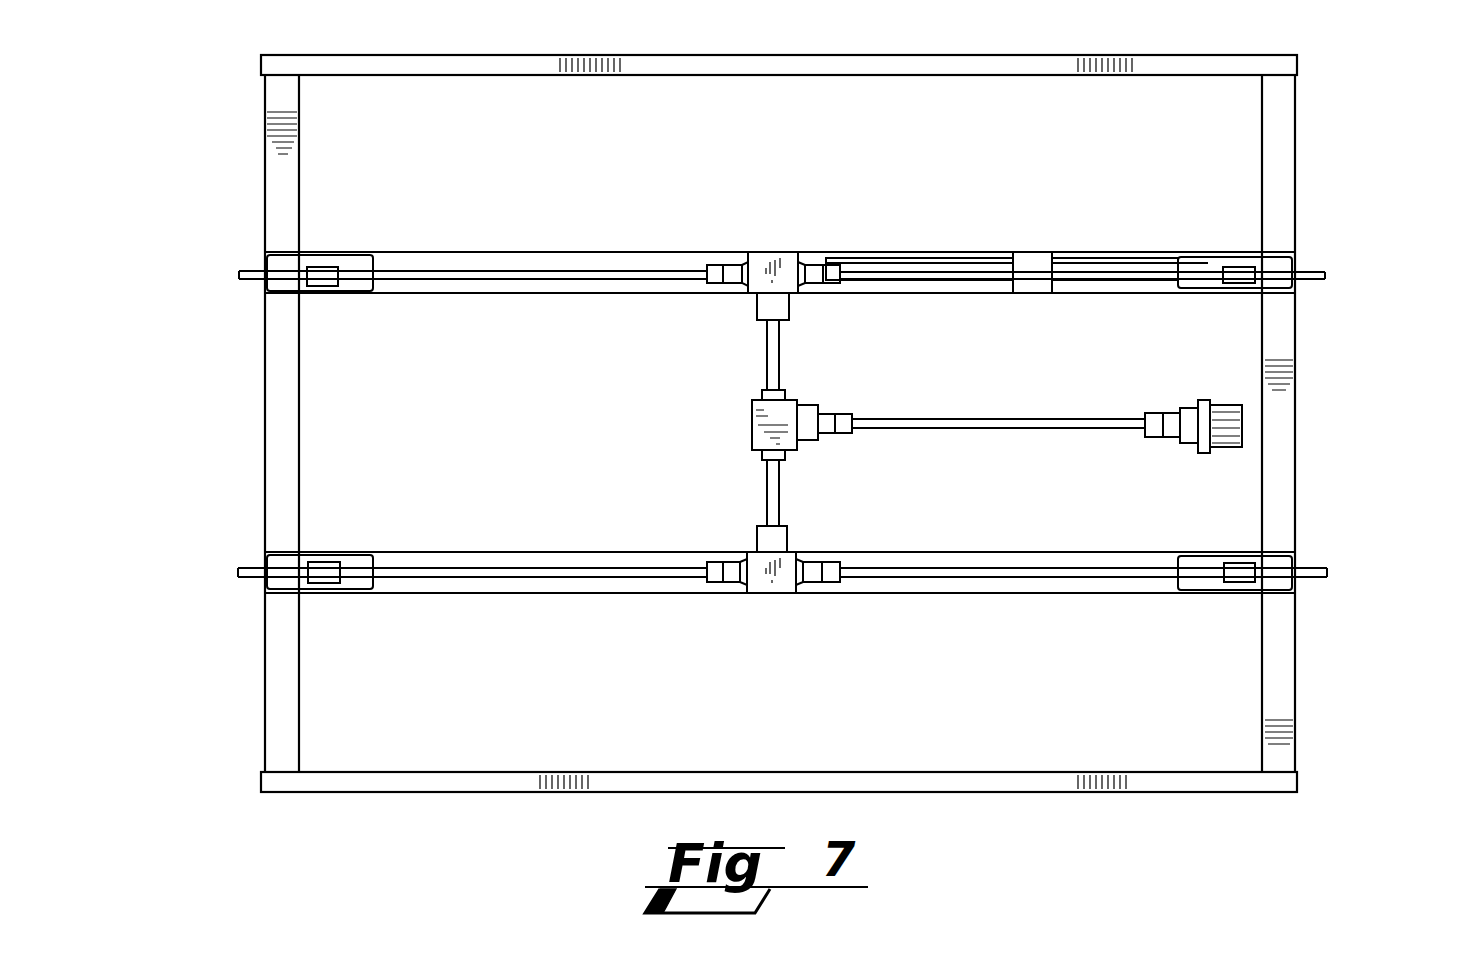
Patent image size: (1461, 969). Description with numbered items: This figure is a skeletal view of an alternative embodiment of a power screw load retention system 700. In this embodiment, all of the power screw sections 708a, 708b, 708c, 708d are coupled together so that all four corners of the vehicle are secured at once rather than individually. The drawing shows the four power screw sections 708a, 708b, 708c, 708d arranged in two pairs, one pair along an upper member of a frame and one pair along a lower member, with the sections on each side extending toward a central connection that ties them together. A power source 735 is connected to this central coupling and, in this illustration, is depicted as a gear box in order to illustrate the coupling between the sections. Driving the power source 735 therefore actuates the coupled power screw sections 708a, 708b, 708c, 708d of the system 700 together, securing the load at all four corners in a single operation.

The power screw load retention system 700 is at (1318, 100).
The power screw section 708a is at (232, 243).
The power screw section 708b is at (1337, 245).
The power screw section 708c is at (232, 543).
The power screw section 708d is at (1338, 545).
The power source 735 is at (1243, 428).